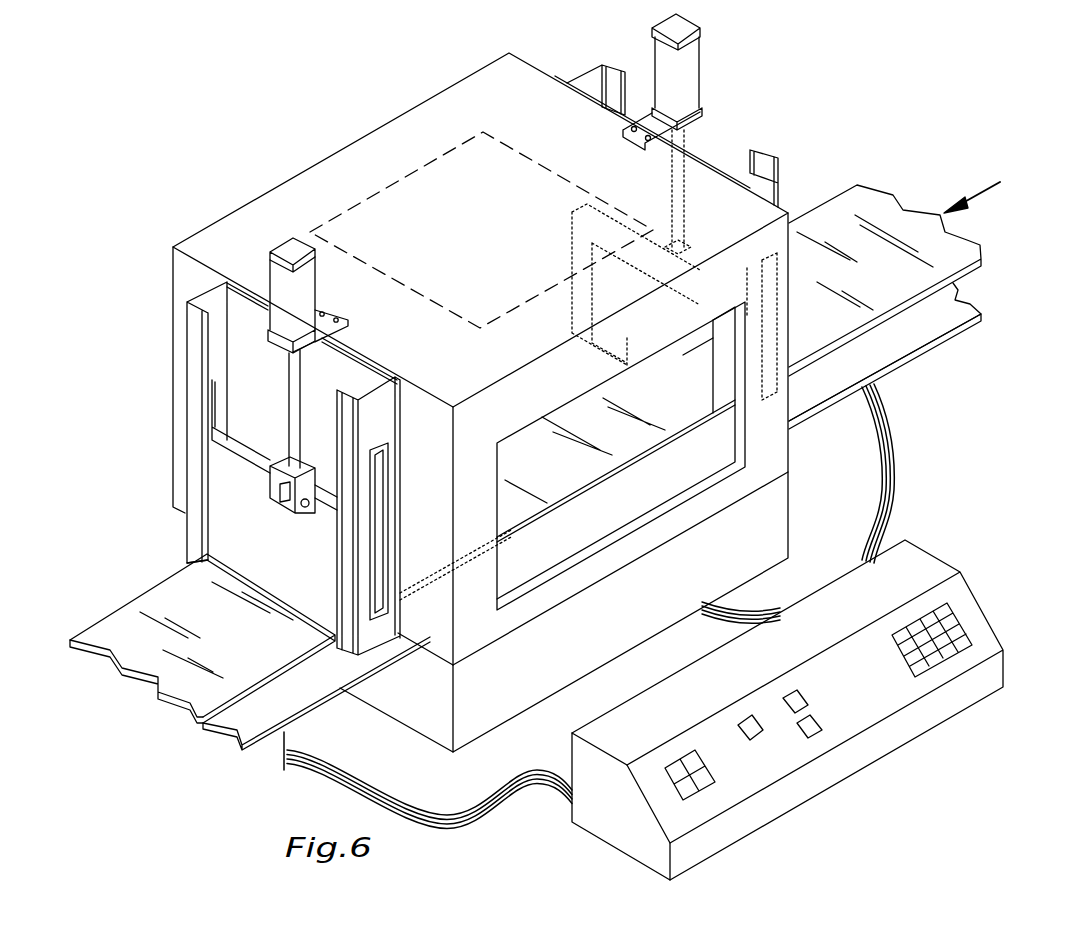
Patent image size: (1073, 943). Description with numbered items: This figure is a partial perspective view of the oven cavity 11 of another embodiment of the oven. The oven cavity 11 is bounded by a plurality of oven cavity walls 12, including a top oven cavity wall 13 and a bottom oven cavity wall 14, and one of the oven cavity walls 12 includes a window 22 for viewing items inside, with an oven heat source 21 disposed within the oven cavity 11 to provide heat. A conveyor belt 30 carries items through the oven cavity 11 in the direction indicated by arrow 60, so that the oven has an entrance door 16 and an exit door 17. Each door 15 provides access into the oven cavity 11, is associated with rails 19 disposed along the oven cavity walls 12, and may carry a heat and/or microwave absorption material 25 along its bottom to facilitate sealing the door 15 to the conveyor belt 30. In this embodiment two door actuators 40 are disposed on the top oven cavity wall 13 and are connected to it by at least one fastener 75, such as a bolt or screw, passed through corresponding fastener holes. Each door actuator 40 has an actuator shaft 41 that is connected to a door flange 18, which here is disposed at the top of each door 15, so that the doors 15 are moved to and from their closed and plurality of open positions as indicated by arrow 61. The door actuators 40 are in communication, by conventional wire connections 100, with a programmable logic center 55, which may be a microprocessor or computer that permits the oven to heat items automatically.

The oven cavity 11 is at (480, 401).
The oven cavity walls 12 is at (433, 118).
The top oven cavity wall 13 is at (285, 200).
The bottom oven cavity wall 14 is at (620, 482).
The door 15 is at (683, 353).
The entrance door 16 is at (707, 342).
The exit door 17 is at (228, 468).
The door flange 18 is at (790, 398).
The rail 19 is at (603, 62).
The oven heat source 21 is at (420, 186).
The window 22 is at (592, 410).
The heat and/or microwave absorption material 25 is at (197, 566).
The conveyor belt 30 is at (966, 252).
The door actuator 40 is at (515, 183).
The actuator shaft 41 is at (682, 137).
The programmable logic center 55 is at (977, 585).
The arrow 60 is at (972, 184).
The arrow 61 is at (277, 362).
The fastener 75 is at (627, 128).
The wire connections 100 is at (887, 452).